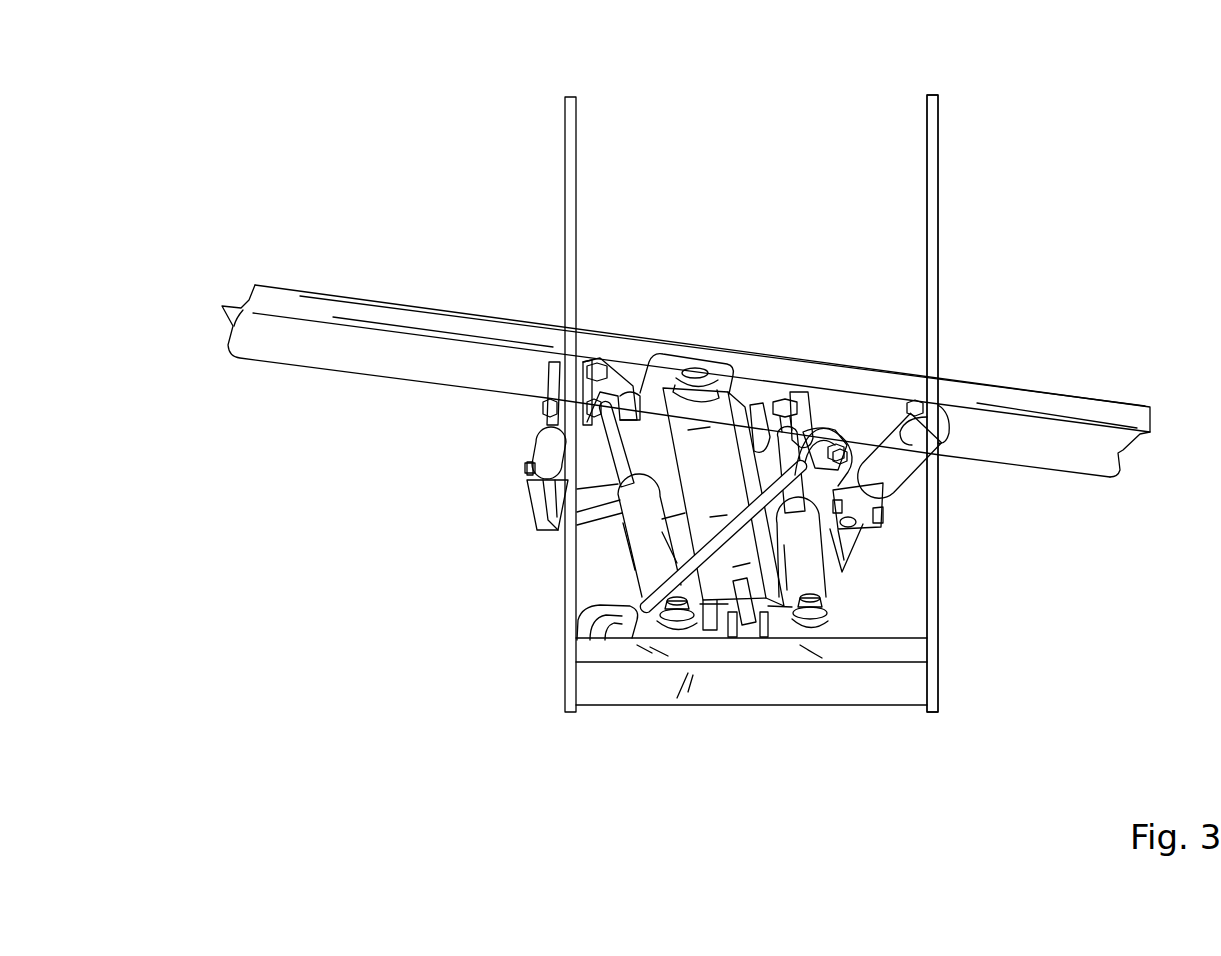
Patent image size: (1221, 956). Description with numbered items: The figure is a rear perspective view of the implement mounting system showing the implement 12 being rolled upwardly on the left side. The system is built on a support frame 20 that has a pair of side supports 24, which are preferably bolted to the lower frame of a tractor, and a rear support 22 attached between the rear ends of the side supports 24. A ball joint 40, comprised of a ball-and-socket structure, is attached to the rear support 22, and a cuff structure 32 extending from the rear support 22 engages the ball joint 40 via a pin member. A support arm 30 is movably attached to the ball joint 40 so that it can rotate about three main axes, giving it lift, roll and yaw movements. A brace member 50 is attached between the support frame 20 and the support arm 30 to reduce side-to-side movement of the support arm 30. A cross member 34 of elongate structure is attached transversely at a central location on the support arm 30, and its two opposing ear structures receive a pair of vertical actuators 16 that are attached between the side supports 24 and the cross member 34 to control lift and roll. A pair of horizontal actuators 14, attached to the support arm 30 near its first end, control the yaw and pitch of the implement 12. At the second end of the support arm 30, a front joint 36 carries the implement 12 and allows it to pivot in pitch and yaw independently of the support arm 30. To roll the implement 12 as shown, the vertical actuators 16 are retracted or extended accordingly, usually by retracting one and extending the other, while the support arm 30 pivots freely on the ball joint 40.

The implement 12 is at (298, 345).
The horizontal actuators 14 is at (653, 545).
The vertical actuators 16 is at (554, 448).
The support frame 20 is at (940, 138).
The rear support 22 is at (882, 690).
The side supports 24 is at (568, 189).
The support arm 30 is at (757, 576).
The cuff structure 32 is at (767, 606).
The cross member 34 is at (533, 507).
The front joint 36 is at (705, 368).
The ball joint 40 is at (743, 638).
The brace member 50 is at (637, 605).